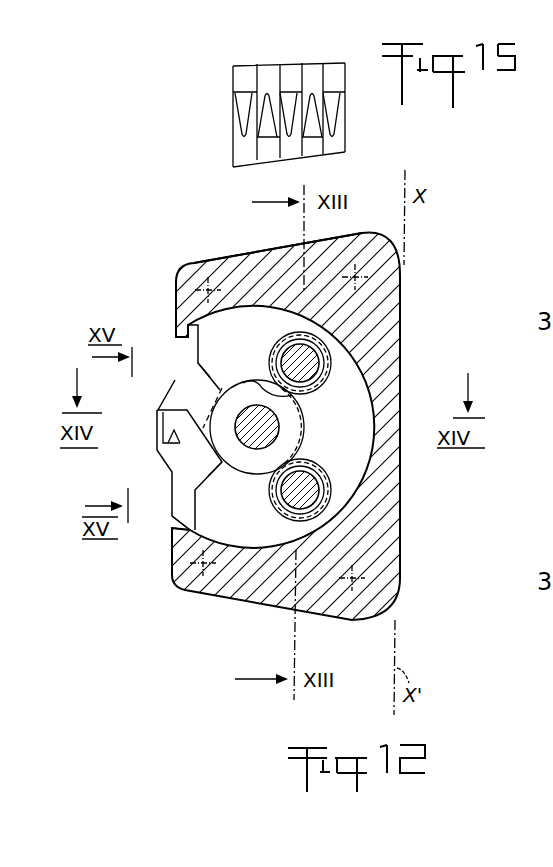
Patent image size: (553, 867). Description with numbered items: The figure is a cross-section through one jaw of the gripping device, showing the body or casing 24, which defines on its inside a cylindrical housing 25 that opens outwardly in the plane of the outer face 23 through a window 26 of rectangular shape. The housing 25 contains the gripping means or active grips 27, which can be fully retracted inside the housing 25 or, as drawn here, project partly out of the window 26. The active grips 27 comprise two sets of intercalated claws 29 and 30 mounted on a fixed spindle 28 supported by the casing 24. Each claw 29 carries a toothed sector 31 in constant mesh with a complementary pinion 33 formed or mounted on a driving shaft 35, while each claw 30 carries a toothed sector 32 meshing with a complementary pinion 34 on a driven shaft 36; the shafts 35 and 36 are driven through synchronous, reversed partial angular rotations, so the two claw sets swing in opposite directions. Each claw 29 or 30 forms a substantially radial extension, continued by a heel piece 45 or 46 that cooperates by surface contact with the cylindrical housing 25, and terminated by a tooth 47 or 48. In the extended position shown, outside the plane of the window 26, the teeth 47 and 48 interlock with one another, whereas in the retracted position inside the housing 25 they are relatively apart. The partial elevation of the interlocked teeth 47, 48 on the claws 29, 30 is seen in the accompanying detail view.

In FIG. 12, the outer face 23 is at (176, 281).
In FIG. 12, the body or casing 24 is at (231, 264).
In FIG. 12, the cylindrical housing 25 is at (372, 478).
In FIG. 12, the window 26 is at (158, 518).
In FIG. 12, the gripping means or active grips 27 is at (146, 452).
In FIG. 12, the fixed spindle 28 is at (268, 433).
In FIG. 12, the claws (first set) 29 is at (202, 381).
In FIG. 15, the claws (first set) 29 is at (236, 80).
In FIG. 12, the claws (second set) 30 is at (203, 470).
In FIG. 15, the claws (second set) 30 is at (313, 142).
In FIG. 12, the toothed sector 31 is at (304, 411).
In FIG. 12, the toothed sector 32 is at (248, 380).
In FIG. 12, the pinion 33 is at (332, 508).
In FIG. 12, the pinion 34 is at (332, 360).
In FIG. 12, the driving shaft 35 is at (292, 501).
In FIG. 12, the driven shaft 36 is at (296, 345).
In FIG. 12, the heel piece 45 is at (175, 338).
In FIG. 12, the heel piece 46 is at (168, 524).
In FIG. 12, the tooth 47 is at (167, 421).
In FIG. 15, the tooth 47 is at (238, 120).
In FIG. 12, the tooth 48 is at (171, 462).
In FIG. 15, the tooth 48 is at (310, 112).